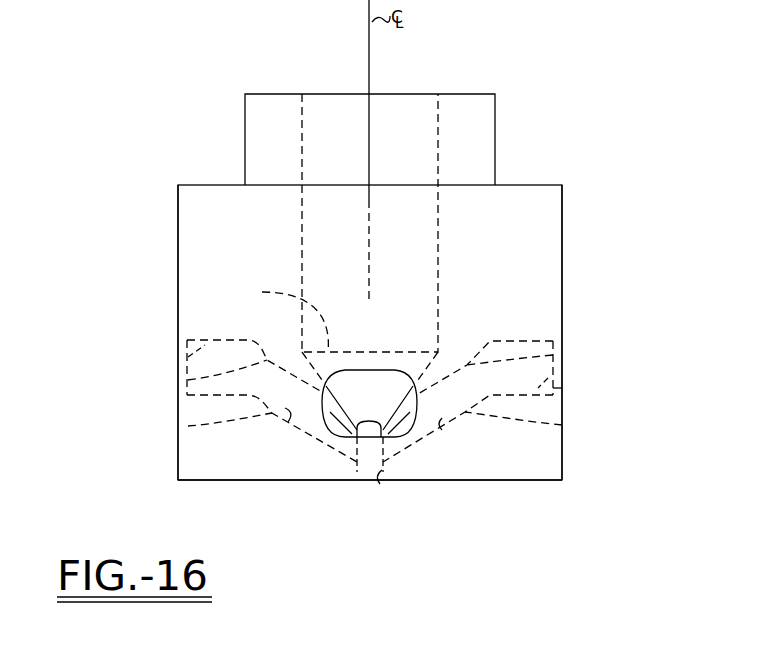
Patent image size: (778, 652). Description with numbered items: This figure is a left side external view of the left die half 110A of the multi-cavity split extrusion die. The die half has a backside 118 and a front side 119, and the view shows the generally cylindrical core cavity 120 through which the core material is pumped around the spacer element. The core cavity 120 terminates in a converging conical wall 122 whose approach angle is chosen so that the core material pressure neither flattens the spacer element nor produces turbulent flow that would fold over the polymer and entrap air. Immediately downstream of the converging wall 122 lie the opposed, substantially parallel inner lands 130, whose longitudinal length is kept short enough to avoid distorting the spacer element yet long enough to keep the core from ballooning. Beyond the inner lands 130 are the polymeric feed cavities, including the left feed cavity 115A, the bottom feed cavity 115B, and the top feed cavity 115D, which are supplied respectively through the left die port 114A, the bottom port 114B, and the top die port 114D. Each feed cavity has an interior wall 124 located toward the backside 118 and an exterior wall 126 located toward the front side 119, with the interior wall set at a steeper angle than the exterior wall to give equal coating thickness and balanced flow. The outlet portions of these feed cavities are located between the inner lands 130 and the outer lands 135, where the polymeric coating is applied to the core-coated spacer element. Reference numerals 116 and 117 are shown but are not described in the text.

The left die half 110A is at (181, 178).
The left die port 114A is at (342, 437).
The bottom port 114B is at (562, 388).
The top die port 114D is at (178, 341).
The left feed cavity 115A is at (374, 390).
The bottom feed cavity 115B is at (548, 378).
The top feed cavity 115D is at (188, 360).
The left side wall 116 is at (178, 218).
The right side wall 117 is at (562, 221).
The backside 118 is at (477, 94).
The front side 119 is at (520, 484).
The core cavity 120 is at (302, 118).
The converging conical wall 122 is at (262, 292).
The interior wall 124 is at (188, 381).
The exterior wall 126 is at (188, 429).
The inner lands 130 is at (367, 440).
The outer lands 135 is at (381, 485).